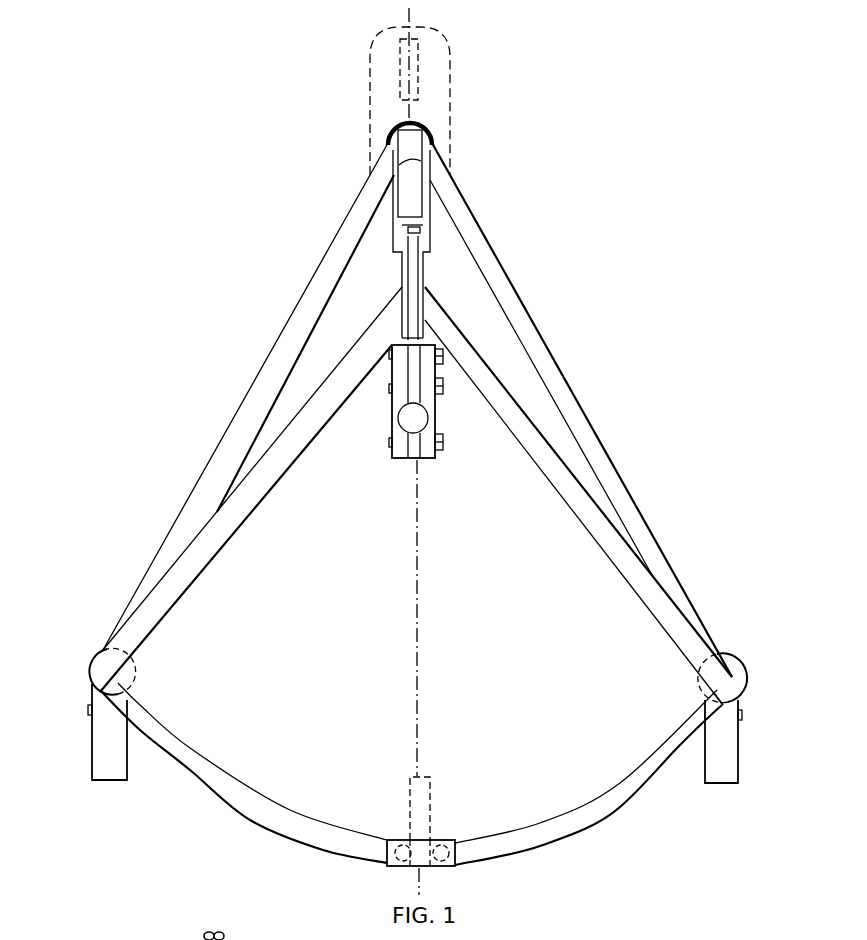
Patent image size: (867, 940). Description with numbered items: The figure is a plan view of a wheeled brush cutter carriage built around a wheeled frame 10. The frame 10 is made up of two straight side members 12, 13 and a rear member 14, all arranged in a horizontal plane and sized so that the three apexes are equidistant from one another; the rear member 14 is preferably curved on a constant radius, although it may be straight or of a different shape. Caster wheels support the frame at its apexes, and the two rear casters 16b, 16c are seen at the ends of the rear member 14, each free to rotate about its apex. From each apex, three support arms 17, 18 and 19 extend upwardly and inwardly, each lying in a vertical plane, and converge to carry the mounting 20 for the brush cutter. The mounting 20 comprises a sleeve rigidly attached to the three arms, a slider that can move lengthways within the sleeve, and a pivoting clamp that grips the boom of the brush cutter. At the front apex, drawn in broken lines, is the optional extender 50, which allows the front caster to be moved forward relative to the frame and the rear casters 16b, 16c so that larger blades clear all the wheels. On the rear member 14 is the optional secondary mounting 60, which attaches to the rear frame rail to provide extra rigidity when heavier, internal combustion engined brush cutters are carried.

The wheeled frame 10 is at (598, 320).
The extender 50 is at (452, 93).
The support arm 18 is at (410, 197).
The side member 13 is at (258, 391).
The side member 12 is at (598, 466).
The support arm 19 is at (208, 553).
The support arm 17 is at (648, 600).
The mounting 20 is at (375, 431).
The rear member 14 is at (250, 815).
The rear caster 16b is at (97, 770).
The rear caster 16c is at (736, 764).
The optional mounting 60 is at (433, 804).